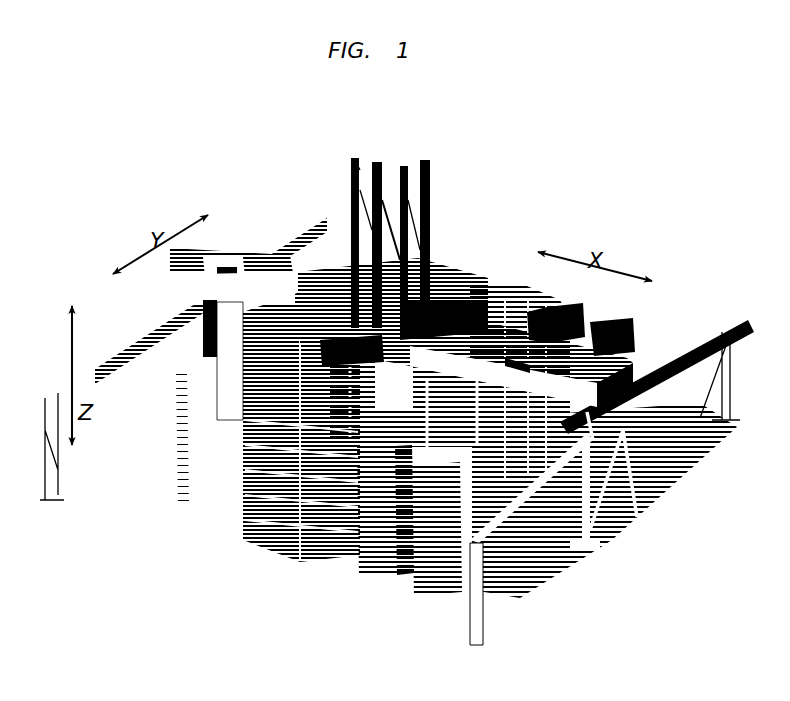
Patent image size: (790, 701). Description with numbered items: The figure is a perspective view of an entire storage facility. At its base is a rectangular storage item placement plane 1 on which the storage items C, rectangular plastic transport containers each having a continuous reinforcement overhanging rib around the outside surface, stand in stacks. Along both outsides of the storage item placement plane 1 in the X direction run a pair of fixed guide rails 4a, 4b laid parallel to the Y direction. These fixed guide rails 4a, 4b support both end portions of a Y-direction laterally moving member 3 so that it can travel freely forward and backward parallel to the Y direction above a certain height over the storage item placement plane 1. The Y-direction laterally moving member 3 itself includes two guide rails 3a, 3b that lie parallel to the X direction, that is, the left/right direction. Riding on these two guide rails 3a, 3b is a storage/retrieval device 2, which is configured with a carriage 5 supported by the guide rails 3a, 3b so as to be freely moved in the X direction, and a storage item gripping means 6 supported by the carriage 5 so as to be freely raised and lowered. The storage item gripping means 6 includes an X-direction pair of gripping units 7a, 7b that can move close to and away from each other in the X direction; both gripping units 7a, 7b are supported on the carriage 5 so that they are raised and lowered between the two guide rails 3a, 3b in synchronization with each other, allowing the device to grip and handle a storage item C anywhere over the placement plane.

The storage item placement plane 1 is at (262, 540).
The storage/retrieval device 2 is at (448, 263).
The Y-direction laterally moving member 3 is at (270, 257).
The guide rail 3a is at (524, 370).
The guide rail 3b is at (625, 358).
The fixed guide rail 4a is at (110, 348).
The fixed guide rail 4b is at (722, 318).
The carriage 5 is at (484, 303).
The storage item gripping means 6 is at (349, 213).
The gripping unit 7a is at (349, 184).
The gripping unit 7b is at (434, 210).
The storage item C is at (200, 490).